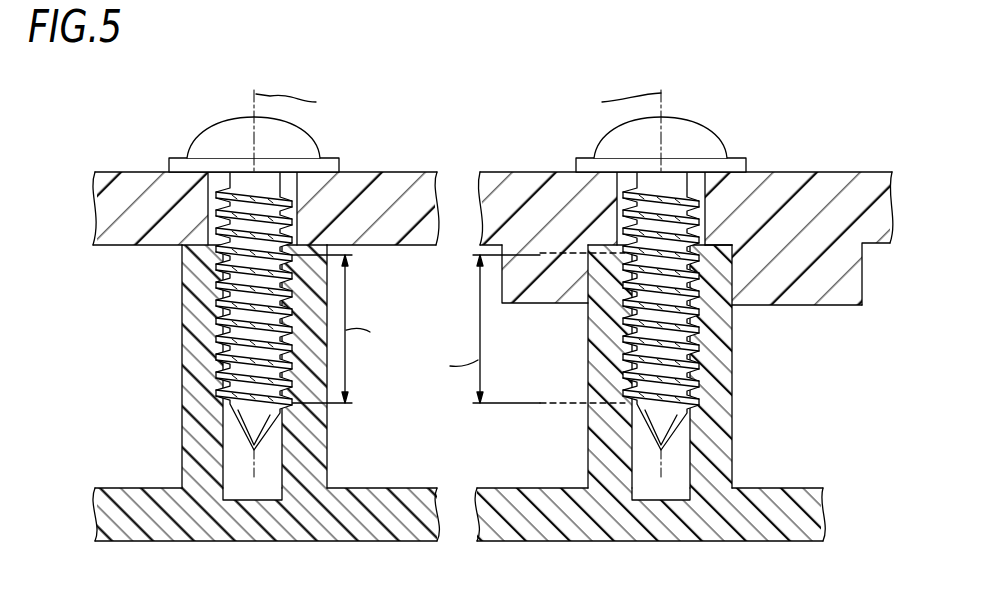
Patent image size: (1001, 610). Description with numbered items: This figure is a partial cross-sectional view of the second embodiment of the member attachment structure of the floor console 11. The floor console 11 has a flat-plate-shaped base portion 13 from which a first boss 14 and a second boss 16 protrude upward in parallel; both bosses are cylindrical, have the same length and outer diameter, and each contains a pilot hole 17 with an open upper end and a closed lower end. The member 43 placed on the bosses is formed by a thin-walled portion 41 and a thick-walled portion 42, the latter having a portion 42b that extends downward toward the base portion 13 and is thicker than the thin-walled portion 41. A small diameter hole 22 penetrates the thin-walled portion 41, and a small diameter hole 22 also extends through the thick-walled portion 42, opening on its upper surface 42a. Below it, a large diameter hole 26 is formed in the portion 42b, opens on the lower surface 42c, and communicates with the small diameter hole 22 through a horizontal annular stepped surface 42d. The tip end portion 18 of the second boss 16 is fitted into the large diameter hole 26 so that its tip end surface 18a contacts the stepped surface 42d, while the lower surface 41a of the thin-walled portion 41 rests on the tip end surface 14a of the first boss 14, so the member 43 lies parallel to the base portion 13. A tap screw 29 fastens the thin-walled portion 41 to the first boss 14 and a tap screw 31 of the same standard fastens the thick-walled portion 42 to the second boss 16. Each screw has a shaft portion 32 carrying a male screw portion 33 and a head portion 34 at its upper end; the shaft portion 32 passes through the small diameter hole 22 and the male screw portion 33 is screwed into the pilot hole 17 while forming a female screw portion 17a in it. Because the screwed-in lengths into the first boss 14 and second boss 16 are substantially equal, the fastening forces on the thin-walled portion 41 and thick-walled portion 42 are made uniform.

The floor console 11 is at (822, 125).
The base portion 13 is at (490, 545).
The first boss 14 is at (192, 432).
The tip end surface of the first boss 14a is at (186, 247).
The second boss 16 is at (720, 474).
The pilot hole 17 is at (237, 490).
The female screw portion 17a is at (222, 372).
The tip end portion of the second boss 18 is at (598, 282).
The tip end surface of the second boss 18a is at (542, 205).
The small diameter hole 22 is at (293, 156).
The large diameter hole 26 is at (745, 296).
The tap screw 29 is at (225, 282).
The tap screw 31 is at (710, 283).
The shaft portion 32 is at (216, 296).
The male screw portion 33 is at (220, 340).
The head portion 34 is at (200, 128).
The thin-walled portion 41 is at (112, 247).
The lower surface of the thin-walled portion 41a is at (382, 250).
The thick-walled portion 42 is at (694, 257).
The upper surface of the thick-walled portion 42a is at (835, 172).
The downward-extending portion 42b is at (848, 268).
The lower surface of the thick-walled portion 42c is at (530, 305).
The stepped surface 42d is at (735, 258).
The member 43 is at (124, 171).